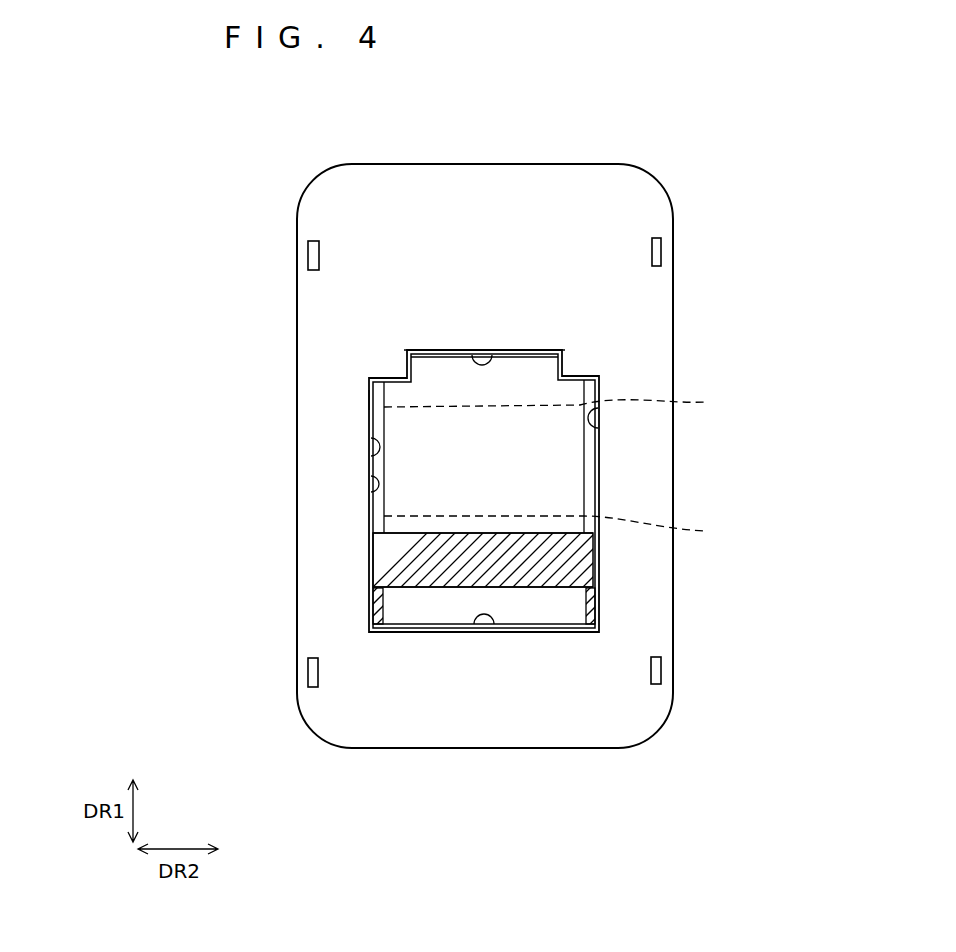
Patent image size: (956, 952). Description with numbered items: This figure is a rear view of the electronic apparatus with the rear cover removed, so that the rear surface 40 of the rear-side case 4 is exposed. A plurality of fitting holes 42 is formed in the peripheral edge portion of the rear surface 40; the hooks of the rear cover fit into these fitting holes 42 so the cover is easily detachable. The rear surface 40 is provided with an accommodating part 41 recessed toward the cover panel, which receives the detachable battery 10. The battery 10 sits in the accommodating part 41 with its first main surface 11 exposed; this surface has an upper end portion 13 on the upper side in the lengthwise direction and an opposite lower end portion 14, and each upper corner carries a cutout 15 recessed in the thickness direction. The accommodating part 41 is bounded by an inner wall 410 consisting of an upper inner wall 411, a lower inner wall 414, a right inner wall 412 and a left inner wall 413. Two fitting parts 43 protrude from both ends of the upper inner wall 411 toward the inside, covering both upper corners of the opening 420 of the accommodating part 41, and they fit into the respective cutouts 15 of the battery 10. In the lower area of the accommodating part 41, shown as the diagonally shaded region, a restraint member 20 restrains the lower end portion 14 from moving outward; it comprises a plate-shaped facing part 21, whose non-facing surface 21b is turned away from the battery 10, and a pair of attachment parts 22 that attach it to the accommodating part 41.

The rear-side case 4 is at (638, 187).
The rear surface 40 is at (655, 210).
The accommodating part 41 is at (372, 418).
The fitting holes 42 is at (314, 255).
The fitting parts 43 is at (402, 372).
The battery 10 is at (563, 470).
The first main surface 11 is at (565, 496).
The upper end portion 13 is at (560, 401).
The lower end portion 14 is at (560, 530).
The cutout 15 is at (402, 369).
The restraint member 20 is at (375, 555).
The facing part 21 is at (375, 572).
The non-facing surface 21b is at (375, 545).
The attachment parts 22 is at (375, 607).
The inner wall 410 is at (373, 457).
The upper inner wall 411 is at (496, 351).
The right inner wall 412 is at (598, 430).
The left inner wall 413 is at (372, 490).
The lower inner wall 414 is at (490, 631).
The opening 420 is at (373, 400).